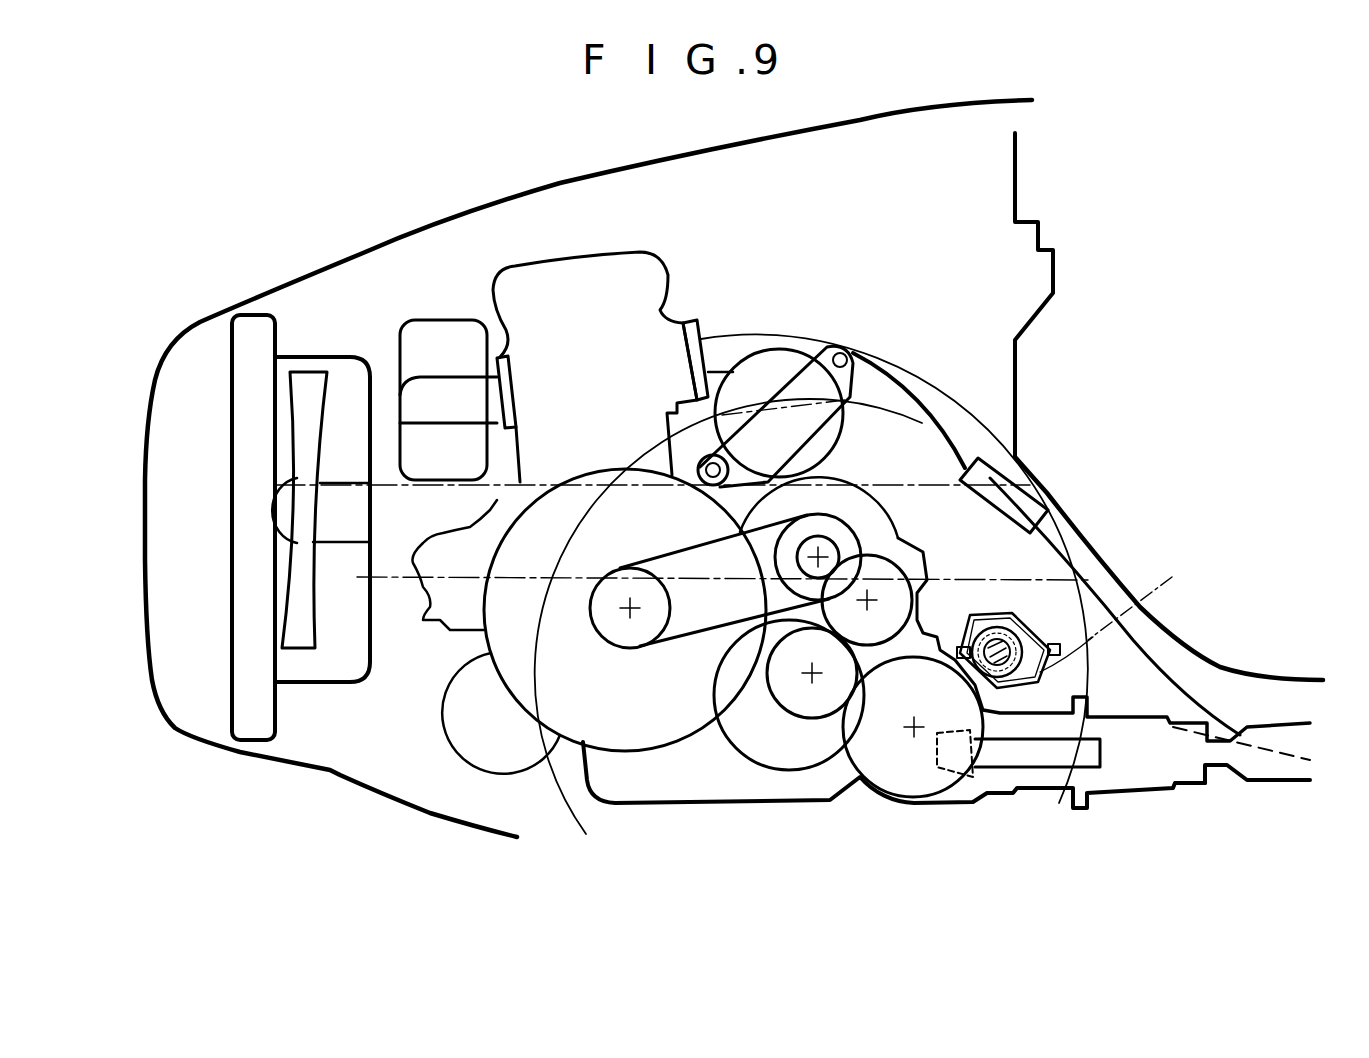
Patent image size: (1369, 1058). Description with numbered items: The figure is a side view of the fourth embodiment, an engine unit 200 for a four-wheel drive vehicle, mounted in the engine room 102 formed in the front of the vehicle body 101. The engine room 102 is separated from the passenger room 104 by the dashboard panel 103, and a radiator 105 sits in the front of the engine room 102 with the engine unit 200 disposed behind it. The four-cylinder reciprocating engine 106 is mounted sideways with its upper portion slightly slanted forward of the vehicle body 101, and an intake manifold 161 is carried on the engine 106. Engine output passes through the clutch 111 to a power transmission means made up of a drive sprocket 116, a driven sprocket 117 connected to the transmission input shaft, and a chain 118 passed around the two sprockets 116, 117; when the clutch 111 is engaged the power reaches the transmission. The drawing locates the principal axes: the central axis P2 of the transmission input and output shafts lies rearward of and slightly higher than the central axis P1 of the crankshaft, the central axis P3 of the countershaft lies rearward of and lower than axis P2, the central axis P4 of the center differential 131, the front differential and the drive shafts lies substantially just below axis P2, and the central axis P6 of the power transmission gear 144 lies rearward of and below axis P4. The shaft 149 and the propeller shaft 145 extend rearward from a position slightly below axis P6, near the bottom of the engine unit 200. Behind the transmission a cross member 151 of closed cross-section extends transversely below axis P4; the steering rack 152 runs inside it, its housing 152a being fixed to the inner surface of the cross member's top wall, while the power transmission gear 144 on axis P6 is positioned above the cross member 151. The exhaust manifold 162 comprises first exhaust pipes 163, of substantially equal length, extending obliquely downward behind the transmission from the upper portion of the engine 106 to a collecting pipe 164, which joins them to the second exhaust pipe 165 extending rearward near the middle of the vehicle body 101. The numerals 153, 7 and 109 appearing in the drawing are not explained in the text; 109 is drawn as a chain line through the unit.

The vehicle body 101 is at (550, 182).
The engine room 102 is at (852, 270).
The dashboard panel 103 is at (1017, 383).
The passenger room 104 is at (1200, 483).
The radiator 105 is at (216, 522).
The four-cylinder reciprocating engine 106 is at (512, 484).
The intake manifold 161 is at (418, 372).
The shutter unit 153 is at (437, 586).
The clutch 111 is at (653, 750).
The drive sprocket 116 is at (634, 645).
The chain 118 is at (687, 550).
The driven sprocket 117 is at (821, 525).
The gear 7 is at (882, 502).
The first exhaust pipes 163 is at (903, 393).
The collecting pipe 164 is at (1030, 490).
The exhaust manifold 162 is at (1100, 588).
The second exhaust pipe 165 is at (1190, 690).
The optical axis 109 is at (1153, 599).
The engine unit 200 is at (1020, 291).
The housing of the steering rack 152a is at (990, 607).
The steering rack 152 is at (1052, 652).
The cross member 151 is at (978, 690).
The shaft 149 is at (1097, 768).
The center differential 131 is at (797, 768).
The propeller shaft 145 is at (1292, 786).
The power transmission gear 144 is at (917, 800).
The central axis of the crankshaft P1 is at (627, 612).
The central axis of the input shaft and output shaft P2 is at (832, 552).
The central axis of the countershaft P3 is at (885, 600).
The central axis of the center differential, front differential and drive shafts P4 is at (808, 686).
The central axis of the power transmission gear P6 is at (912, 732).